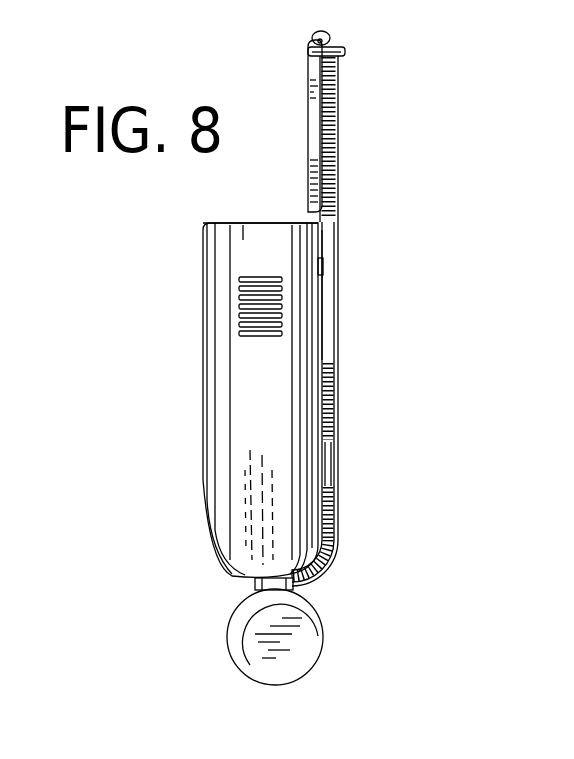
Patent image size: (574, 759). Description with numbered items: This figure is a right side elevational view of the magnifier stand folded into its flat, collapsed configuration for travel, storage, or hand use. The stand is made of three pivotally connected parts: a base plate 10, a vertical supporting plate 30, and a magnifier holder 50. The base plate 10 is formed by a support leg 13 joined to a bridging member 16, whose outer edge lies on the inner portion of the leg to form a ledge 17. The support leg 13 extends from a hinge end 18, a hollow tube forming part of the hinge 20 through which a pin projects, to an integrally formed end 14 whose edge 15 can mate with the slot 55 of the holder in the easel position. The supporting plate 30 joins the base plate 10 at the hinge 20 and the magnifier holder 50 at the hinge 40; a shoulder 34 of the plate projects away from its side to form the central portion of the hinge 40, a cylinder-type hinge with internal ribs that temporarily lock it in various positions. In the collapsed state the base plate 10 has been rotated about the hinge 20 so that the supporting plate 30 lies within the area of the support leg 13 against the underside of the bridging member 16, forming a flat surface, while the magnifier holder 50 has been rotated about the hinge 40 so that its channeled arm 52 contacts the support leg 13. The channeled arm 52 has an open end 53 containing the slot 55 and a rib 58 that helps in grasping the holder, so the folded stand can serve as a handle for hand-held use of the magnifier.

The base plate 10 is at (340, 368).
The support leg 13 is at (339, 308).
The end 14 is at (340, 410).
The edge 15 is at (330, 444).
The bridging member 16 is at (308, 133).
The ledge 17 is at (340, 140).
The hinge end 18 is at (330, 33).
The hinge 20 is at (312, 33).
The supporting plate 30 is at (343, 500).
The shoulder 34 is at (330, 565).
The hinge 40 is at (230, 628).
The magnifier holder 50 is at (203, 400).
The channeled arm 52 is at (247, 497).
The open end 53 is at (243, 222).
The slot 55 is at (323, 267).
The rib 58 is at (240, 320).